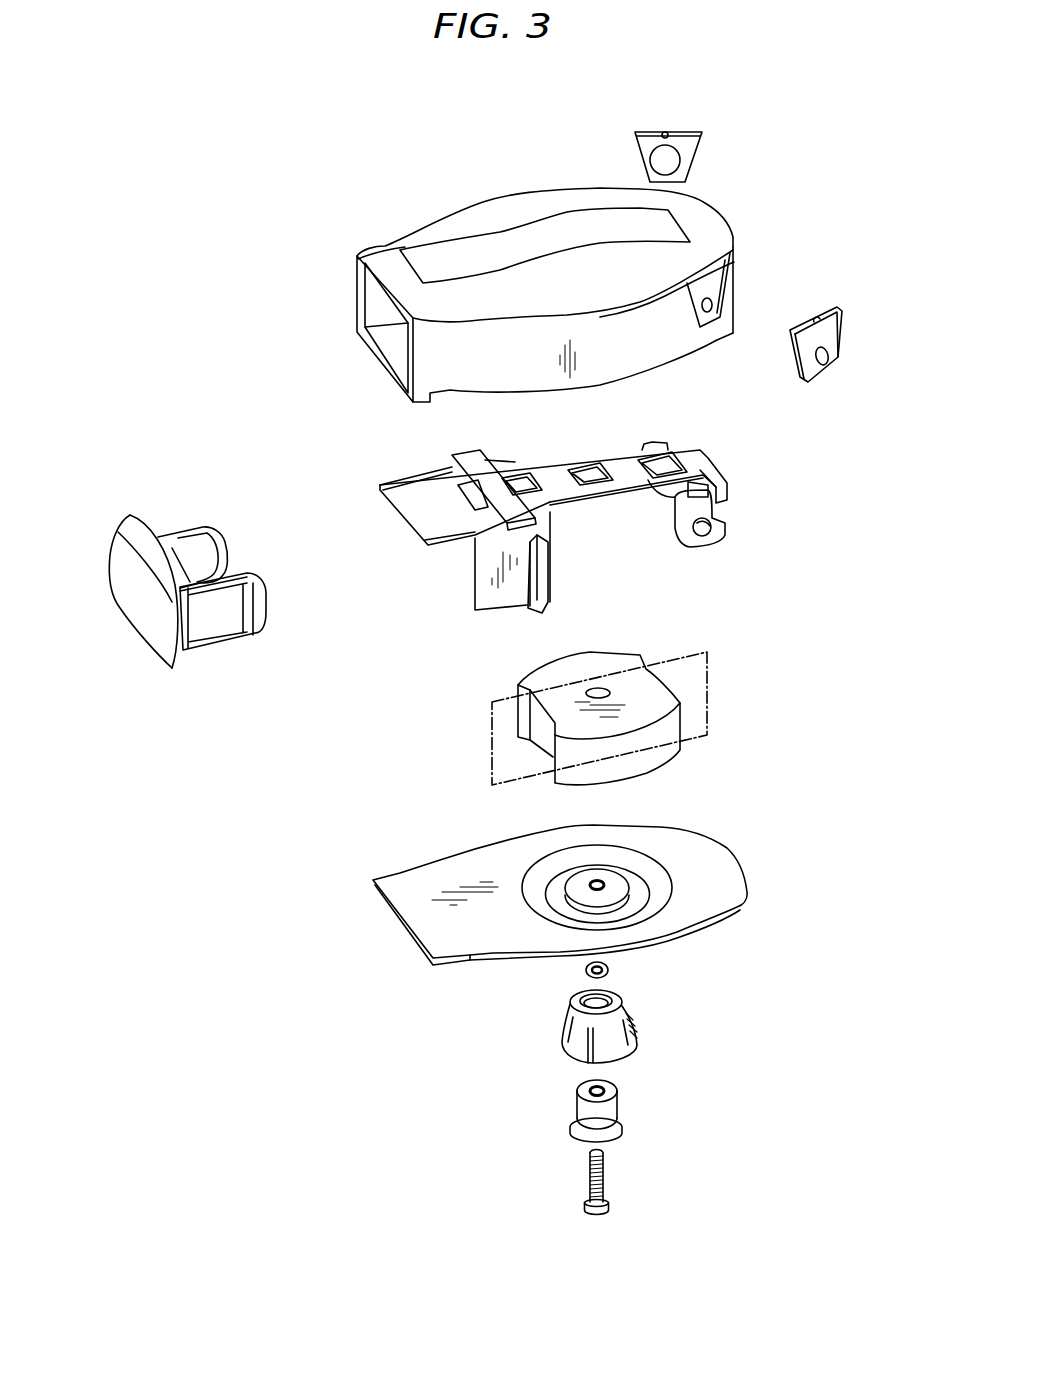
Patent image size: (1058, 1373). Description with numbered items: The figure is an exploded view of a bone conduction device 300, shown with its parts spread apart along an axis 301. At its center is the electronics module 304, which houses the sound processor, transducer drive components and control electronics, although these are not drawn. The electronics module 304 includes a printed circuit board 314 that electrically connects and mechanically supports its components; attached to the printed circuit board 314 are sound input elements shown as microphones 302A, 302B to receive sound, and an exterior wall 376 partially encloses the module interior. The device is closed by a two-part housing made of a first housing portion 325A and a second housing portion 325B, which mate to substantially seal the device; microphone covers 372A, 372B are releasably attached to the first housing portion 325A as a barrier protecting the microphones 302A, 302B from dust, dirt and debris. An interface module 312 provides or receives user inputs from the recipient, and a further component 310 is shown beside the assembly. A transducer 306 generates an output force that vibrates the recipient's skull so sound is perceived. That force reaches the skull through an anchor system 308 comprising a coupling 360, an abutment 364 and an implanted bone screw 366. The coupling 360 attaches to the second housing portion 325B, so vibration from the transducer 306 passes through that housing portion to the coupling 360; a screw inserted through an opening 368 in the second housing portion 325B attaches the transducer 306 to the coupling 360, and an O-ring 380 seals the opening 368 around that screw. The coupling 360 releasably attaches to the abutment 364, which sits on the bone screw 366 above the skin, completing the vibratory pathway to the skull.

The bone conduction device 300 is at (280, 133).
The pivot axis 301 is at (707, 680).
The microphone 302A is at (650, 443).
The microphone 302B is at (717, 530).
The electronics module 304 is at (741, 477).
The transducer 306 is at (665, 755).
The anchor system 308 is at (412, 1088).
The end cap 310 is at (123, 623).
The interface module 312 is at (551, 218).
The printed circuit board 314 is at (593, 457).
The first housing portion 325A is at (431, 230).
The second housing portion 325B is at (438, 860).
The coupling 360 is at (560, 1020).
The abutment 364 is at (577, 1105).
The bone screw 366 is at (590, 1177).
The opening 368 is at (605, 885).
The microphone cover 372A is at (697, 153).
The microphone cover 372B is at (838, 350).
The exterior wall 376 is at (473, 592).
The O-ring 380 is at (613, 972).